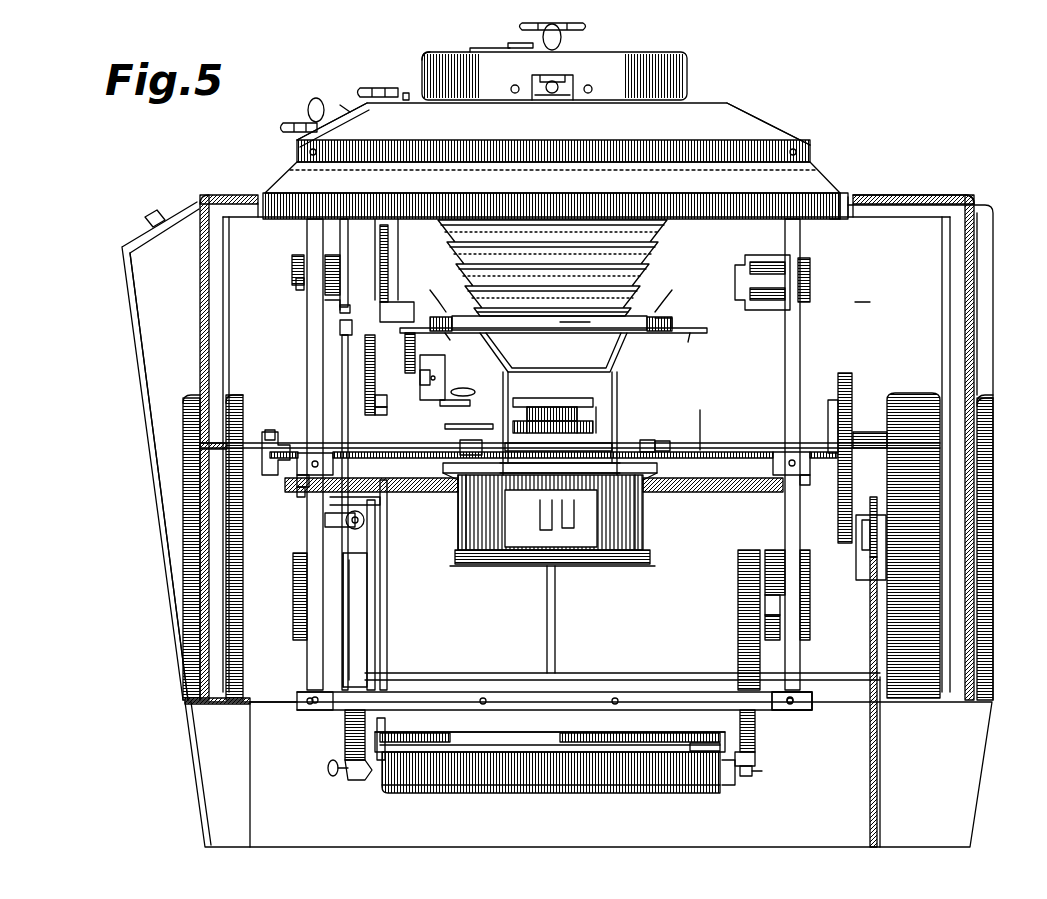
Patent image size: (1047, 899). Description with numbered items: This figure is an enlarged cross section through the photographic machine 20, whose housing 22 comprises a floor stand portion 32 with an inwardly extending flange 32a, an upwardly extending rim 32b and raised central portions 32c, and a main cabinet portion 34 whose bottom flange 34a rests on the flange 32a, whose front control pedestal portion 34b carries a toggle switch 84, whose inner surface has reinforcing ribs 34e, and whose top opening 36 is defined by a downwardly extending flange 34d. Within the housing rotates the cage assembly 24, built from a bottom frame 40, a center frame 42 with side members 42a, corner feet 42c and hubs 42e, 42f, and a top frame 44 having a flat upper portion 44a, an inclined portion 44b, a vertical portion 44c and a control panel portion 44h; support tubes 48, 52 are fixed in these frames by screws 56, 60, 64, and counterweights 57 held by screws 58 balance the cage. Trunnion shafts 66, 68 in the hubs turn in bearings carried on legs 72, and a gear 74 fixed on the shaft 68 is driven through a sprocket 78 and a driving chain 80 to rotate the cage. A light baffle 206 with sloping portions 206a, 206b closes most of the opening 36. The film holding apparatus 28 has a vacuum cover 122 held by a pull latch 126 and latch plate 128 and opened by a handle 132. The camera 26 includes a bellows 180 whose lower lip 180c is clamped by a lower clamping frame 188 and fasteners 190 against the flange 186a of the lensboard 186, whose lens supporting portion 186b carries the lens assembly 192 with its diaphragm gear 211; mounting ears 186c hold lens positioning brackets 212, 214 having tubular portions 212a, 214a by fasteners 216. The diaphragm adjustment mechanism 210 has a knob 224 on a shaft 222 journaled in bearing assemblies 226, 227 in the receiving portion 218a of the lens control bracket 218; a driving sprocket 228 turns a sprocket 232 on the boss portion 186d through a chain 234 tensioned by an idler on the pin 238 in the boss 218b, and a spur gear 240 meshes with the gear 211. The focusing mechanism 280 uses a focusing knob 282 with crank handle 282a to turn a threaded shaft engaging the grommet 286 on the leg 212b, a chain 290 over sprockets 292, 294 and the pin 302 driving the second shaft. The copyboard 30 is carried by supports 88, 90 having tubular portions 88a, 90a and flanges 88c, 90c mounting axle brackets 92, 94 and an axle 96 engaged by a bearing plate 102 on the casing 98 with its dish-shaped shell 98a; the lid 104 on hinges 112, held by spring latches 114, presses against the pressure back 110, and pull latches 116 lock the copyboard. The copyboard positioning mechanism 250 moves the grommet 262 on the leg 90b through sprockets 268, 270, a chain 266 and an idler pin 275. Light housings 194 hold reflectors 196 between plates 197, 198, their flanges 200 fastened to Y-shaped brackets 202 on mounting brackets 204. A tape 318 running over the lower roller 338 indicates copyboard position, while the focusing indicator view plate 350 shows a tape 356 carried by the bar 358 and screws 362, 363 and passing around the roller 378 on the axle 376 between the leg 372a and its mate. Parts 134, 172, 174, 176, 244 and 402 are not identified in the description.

The apparatus 20 is at (120, 386).
The cover 22 is at (986, 205).
The interior 24 is at (886, 316).
The hopper 26 is at (618, 360).
The top unit 28 is at (686, 53).
The base unit 30 is at (677, 800).
The base 32 is at (978, 775).
The base side wall 32a is at (209, 704).
The base wall 32b is at (265, 690).
The base flange 32c is at (183, 460).
The housing 34 is at (974, 270).
The housing bottom 34a is at (210, 696).
The housing side 34b is at (130, 292).
The housing top 34d is at (862, 197).
The housing inner wall 34e is at (218, 250).
The opening 36 is at (849, 197).
The support block 40 is at (795, 710).
The carriage rail 42 is at (740, 440).
The rail portion 42a is at (680, 448).
The rail portion 42c is at (298, 478).
The rail end 42e is at (268, 428).
The rail end 42f is at (835, 400).
The cover plate 44 is at (752, 124).
The cover top 44a is at (706, 100).
The cover slope 44b is at (738, 108).
The cover slope 44h is at (330, 100).
The cover rim 44c is at (297, 162).
The guide rod 48 is at (307, 370).
The guide rod 52 is at (800, 340).
The lower block 56 is at (312, 702).
The cross bar 57 is at (520, 685).
The cross bar 58 is at (480, 701).
The slide block 60 is at (315, 460).
The pin 64 is at (309, 152).
The bracket 66 is at (262, 432).
The rack 68 is at (868, 432).
The panel 72 is at (226, 575).
The gear 74 is at (846, 373).
The drive shaft 78 is at (874, 497).
The post 80 is at (880, 760).
The hinge 84 is at (160, 210).
The motor housing 88 is at (367, 636).
The motor part 88a is at (293, 582).
The motor shaft 88c is at (345, 745).
The motor 90 is at (740, 610).
The motor part 90a is at (810, 570).
The motor part 90b is at (810, 600).
The motor shaft 90c is at (765, 740).
The coupling 92 is at (348, 762).
The coupling 94 is at (756, 758).
The coupling pin 96 is at (764, 771).
The drum 98 is at (538, 794).
The drum edge 98a is at (455, 778).
The end plate 102 is at (732, 786).
The top plate 104 is at (500, 722).
The plate band 110 is at (568, 724).
The plate end 112 is at (702, 742).
The bracket 114 is at (387, 728).
The knob 116 is at (330, 776).
The top box 122 is at (652, 62).
The bracket base 126 is at (552, 94).
The bracket 128 is at (570, 75).
The knob 132 is at (562, 40).
The box corner 134 is at (430, 58).
The handle bar 172 is at (585, 27).
The handle plate 174 is at (518, 43).
The box ledge 176 is at (480, 50).
The bellows 180 is at (660, 236).
The bellows flange 180c is at (672, 330).
The frame 186 is at (618, 342).
The frame top 186a is at (548, 333).
The frame side 186b is at (614, 380).
The frame flange 186c is at (450, 333).
The frame block 186d is at (480, 358).
The plate 188 is at (588, 332).
The bellows end 190 is at (442, 305).
The drum shaft 192 is at (608, 400).
The funnel side 194 is at (458, 553).
The funnel 196 is at (640, 545).
The funnel flange 197 is at (605, 468).
The tray 198 is at (605, 566).
The tab 200 is at (540, 520).
The tab 202 is at (575, 530).
The bar 204 is at (598, 443).
The cover band 206 is at (810, 170).
The cover step 206a is at (822, 180).
The cover edge 206b is at (826, 220).
The support 210 is at (422, 240).
The drum core 211 is at (605, 418).
The block 212 is at (400, 290).
The block arm 212a is at (325, 305).
The block arm 212b is at (296, 284).
The bracket 214 is at (742, 262).
The bracket plate 214a is at (812, 275).
The flange 216 is at (425, 316).
The gear 218 is at (415, 333).
The gear plate 218a is at (440, 405).
The gear pin 218b is at (430, 378).
The arm 222 is at (380, 505).
The handle 224 is at (395, 88).
The rod 226 is at (378, 405).
The nut 227 is at (380, 415).
The collar 228 is at (380, 408).
The drum 232 is at (480, 400).
The plate 234 is at (495, 340).
The disc 238 is at (460, 396).
The block 240 is at (482, 452).
The peg 244 is at (407, 101).
The rod 250 is at (500, 644).
The motor part 262 is at (810, 618).
The arm 266 is at (725, 455).
The block 268 is at (297, 485).
The block 270 is at (810, 482).
The bar 275 is at (455, 429).
The arm 280 is at (276, 275).
The handle 282 is at (282, 128).
The handle knob 282a is at (310, 100).
The block 286 is at (292, 260).
The belt 290 is at (655, 495).
The block 292 is at (300, 500).
The belt 294 is at (765, 495).
The block 302 is at (662, 441).
The rod 318 is at (373, 572).
The rod 338 is at (370, 657).
The plate 350 is at (340, 103).
The rod 356 is at (342, 358).
The nut 358 is at (340, 310).
The rod 362 is at (350, 262).
The nut 363 is at (340, 338).
The arm 372a is at (330, 520).
The rod 376 is at (375, 548).
The pulley 378 is at (362, 522).
The lid 402 is at (140, 232).